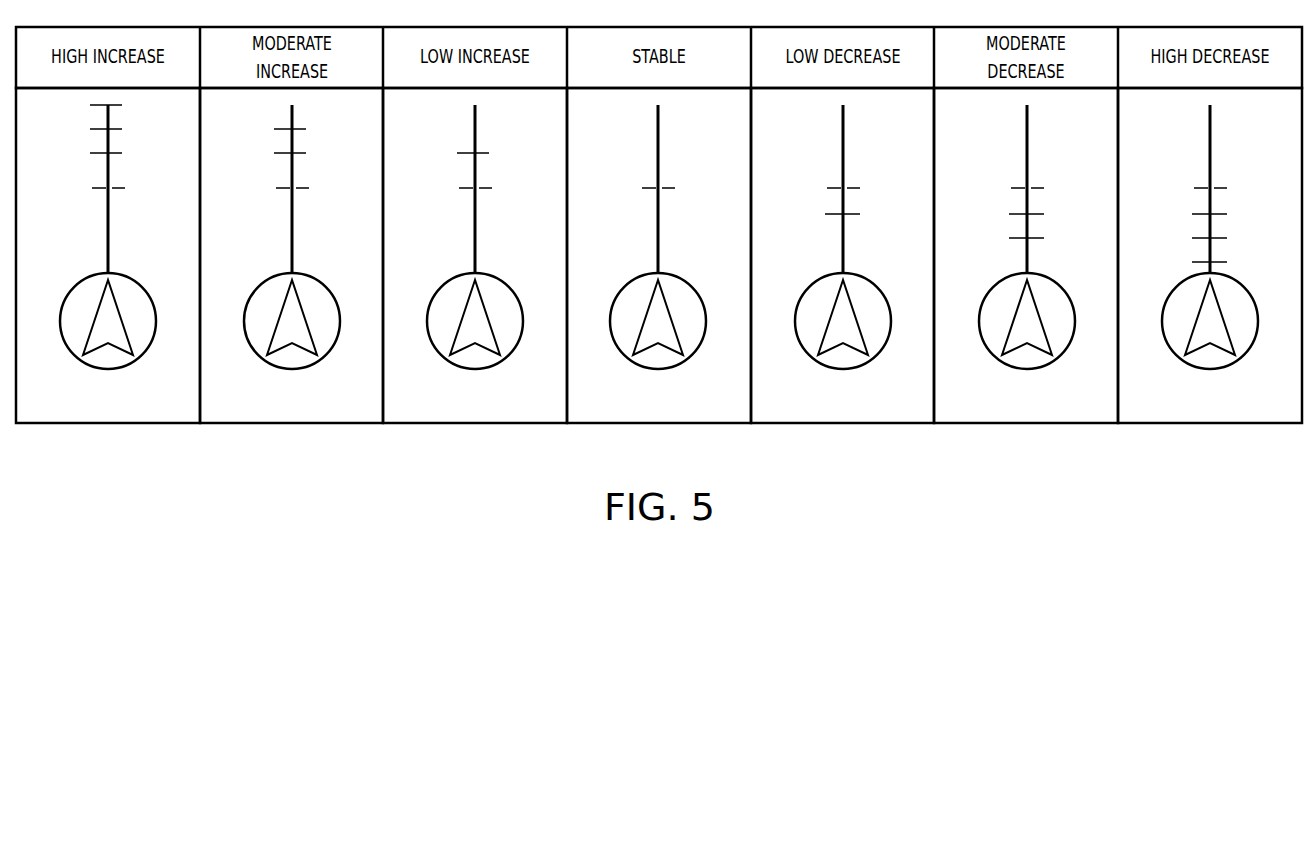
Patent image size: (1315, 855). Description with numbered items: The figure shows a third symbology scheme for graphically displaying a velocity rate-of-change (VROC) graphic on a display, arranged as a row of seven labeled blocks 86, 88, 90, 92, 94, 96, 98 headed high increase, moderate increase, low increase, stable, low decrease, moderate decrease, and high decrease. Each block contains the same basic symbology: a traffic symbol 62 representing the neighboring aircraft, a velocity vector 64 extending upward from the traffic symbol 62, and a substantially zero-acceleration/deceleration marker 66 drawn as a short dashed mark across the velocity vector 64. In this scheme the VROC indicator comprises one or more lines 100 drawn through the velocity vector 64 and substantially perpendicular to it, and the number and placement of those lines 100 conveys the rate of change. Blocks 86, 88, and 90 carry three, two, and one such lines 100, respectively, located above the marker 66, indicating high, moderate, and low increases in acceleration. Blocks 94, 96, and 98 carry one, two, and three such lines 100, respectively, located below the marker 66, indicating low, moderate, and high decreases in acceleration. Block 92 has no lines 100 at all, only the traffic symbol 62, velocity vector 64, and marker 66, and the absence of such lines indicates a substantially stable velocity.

The traffic symbol 62 is at (85, 297).
The velocity vector 64 is at (108, 258).
The substantially zero-acceleration/deceleration marker 66 is at (100, 188).
The lines 100 is at (114, 105).
The block 86 is at (63, 412).
The block 88 is at (247, 412).
The block 90 is at (430, 412).
The block 92 is at (614, 412).
The block 94 is at (798, 412).
The block 96 is at (981, 412).
The block 98 is at (1165, 412).